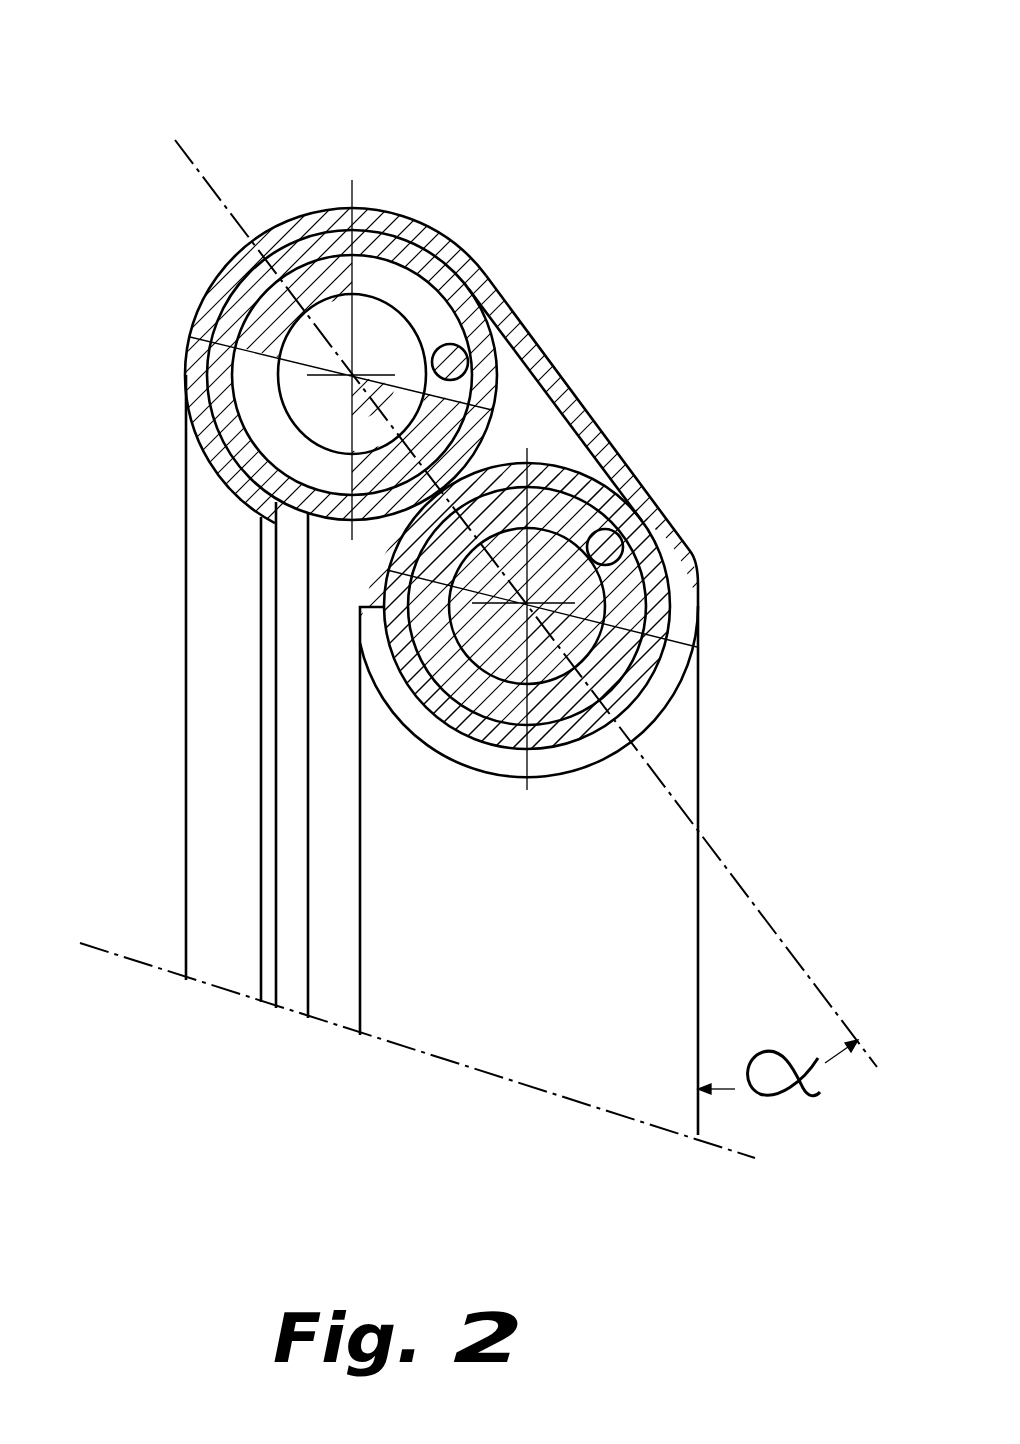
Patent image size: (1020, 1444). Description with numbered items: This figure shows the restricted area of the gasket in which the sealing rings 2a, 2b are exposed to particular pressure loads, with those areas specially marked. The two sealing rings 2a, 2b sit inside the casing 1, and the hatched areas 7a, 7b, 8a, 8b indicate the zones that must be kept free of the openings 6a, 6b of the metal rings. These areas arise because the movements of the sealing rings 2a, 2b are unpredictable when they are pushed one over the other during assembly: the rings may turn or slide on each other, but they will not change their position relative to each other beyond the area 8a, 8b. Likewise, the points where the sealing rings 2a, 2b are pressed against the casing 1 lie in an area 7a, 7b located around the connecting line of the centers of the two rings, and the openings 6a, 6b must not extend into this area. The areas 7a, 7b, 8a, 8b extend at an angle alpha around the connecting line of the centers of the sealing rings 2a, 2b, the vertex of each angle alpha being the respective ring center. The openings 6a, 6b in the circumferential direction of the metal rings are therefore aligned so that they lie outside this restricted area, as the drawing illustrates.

The casing 1 is at (573, 390).
The sealing ring 2a is at (387, 327).
The sealing ring 2b is at (577, 583).
The opening 6a is at (273, 480).
The opening 6b is at (383, 583).
The area 7a is at (318, 270).
The area 7b is at (613, 662).
The area 8a is at (442, 348).
The area 8b is at (613, 447).